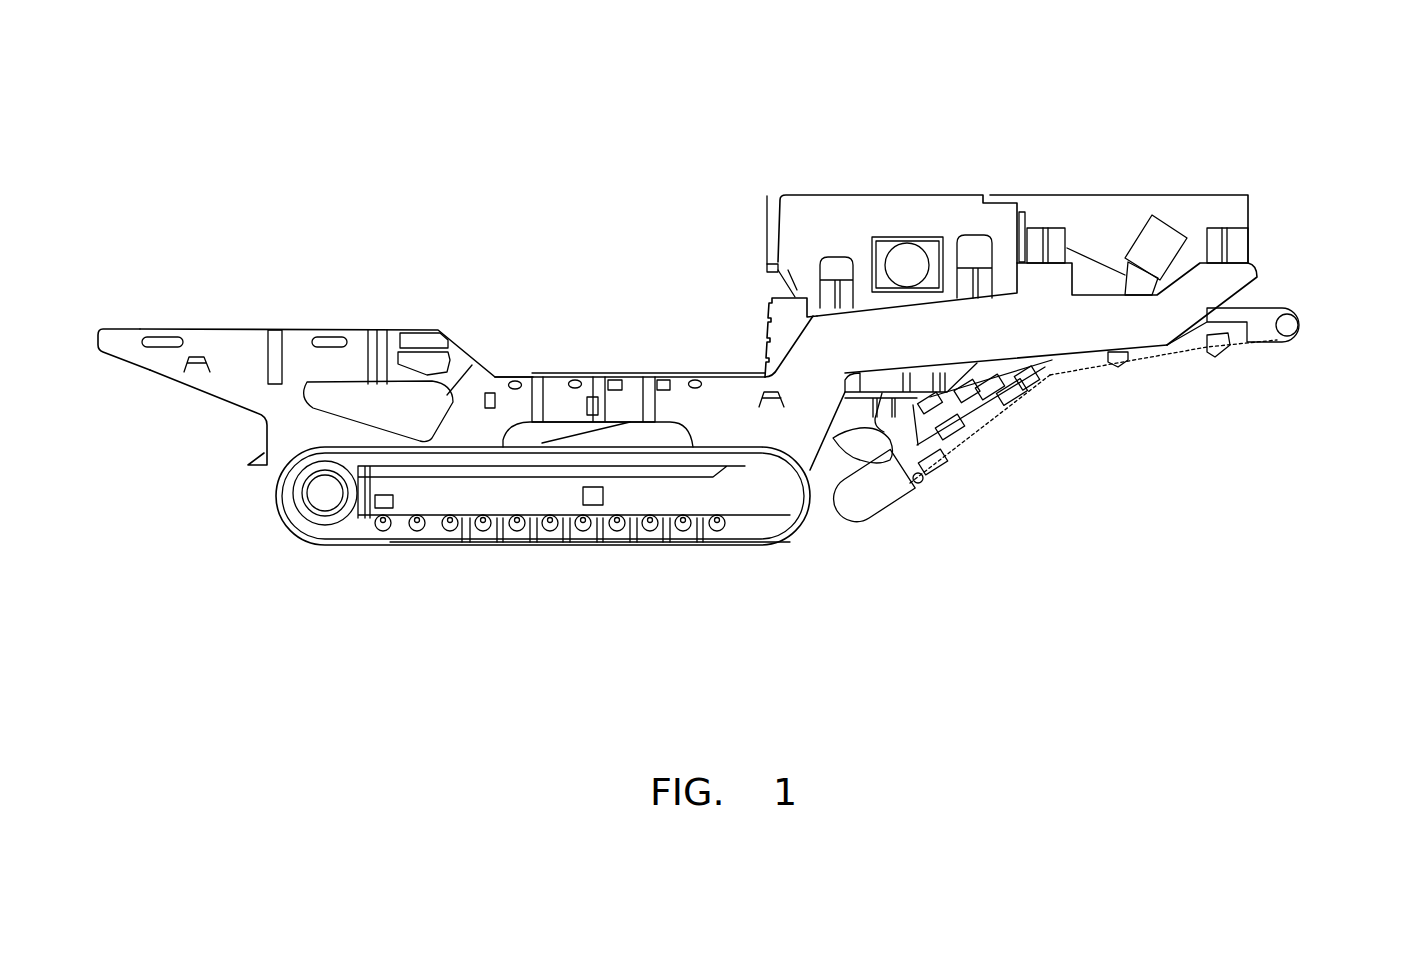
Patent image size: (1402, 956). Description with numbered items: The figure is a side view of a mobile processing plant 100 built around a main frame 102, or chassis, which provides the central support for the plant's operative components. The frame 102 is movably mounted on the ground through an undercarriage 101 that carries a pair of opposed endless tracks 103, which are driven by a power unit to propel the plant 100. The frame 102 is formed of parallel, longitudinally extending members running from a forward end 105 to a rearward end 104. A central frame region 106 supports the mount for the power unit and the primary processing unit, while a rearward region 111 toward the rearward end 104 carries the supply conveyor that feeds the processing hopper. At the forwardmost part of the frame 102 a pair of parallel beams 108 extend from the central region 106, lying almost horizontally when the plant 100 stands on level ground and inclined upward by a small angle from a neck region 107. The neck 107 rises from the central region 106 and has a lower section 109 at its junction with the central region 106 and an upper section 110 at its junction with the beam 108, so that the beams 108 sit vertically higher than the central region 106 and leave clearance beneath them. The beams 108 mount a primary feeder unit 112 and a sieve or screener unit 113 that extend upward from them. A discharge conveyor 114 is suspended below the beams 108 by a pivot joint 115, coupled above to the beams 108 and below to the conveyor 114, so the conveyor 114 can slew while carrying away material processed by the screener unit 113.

The mobile processing plant 100 is at (612, 212).
The undercarriage 101 is at (428, 495).
The main frame 102 is at (727, 398).
The endless tracks 103 is at (318, 548).
The rearward end 104 is at (104, 336).
The forward end 105 is at (1258, 277).
The central frame region 106 is at (558, 392).
The neck region 107 is at (806, 365).
The beams 108 is at (1062, 333).
The lower section 109 is at (810, 468).
The upper section 110 is at (837, 352).
The rearward region 111 is at (232, 345).
The primary feeder unit 112 is at (1118, 207).
The screener unit 113 is at (917, 210).
The discharge conveyor 114 is at (992, 452).
The pivot joint 115 is at (884, 398).